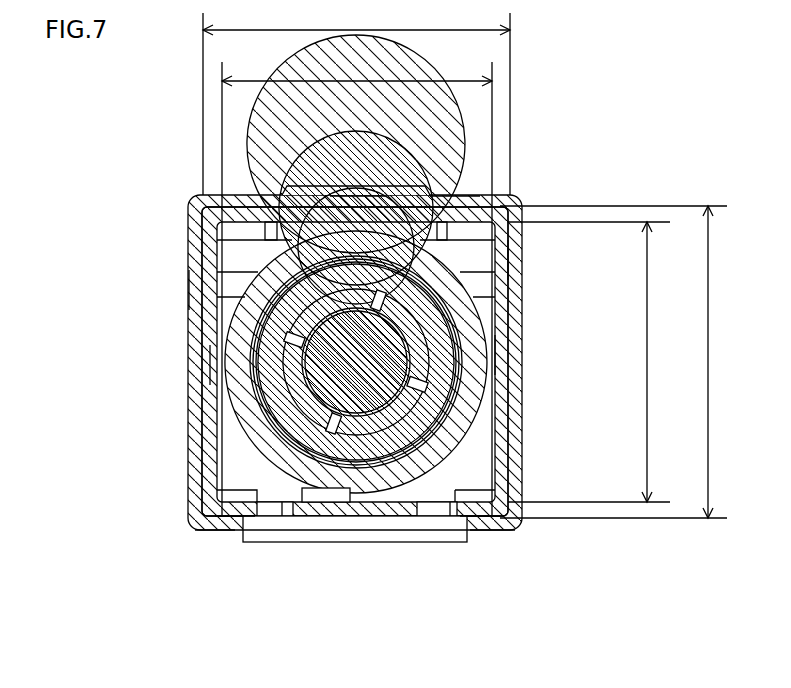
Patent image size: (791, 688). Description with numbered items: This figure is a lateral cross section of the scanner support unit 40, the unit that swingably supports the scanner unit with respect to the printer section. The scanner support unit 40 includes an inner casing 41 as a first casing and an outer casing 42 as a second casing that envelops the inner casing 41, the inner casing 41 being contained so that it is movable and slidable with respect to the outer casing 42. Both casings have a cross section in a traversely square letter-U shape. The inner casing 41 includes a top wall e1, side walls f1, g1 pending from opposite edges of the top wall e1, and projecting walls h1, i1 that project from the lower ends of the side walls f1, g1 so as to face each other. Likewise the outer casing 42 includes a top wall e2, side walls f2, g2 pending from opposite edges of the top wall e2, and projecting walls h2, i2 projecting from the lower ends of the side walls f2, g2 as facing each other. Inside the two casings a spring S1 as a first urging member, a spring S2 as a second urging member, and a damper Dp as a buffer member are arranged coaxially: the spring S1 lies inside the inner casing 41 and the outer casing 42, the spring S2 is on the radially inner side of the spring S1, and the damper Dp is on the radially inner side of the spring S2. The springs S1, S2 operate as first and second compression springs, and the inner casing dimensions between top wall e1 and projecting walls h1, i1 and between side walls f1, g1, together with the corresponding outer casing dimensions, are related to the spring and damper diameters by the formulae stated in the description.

The scanner support unit 40 is at (245, 190).
The inner casing 41 is at (503, 310).
The outer casing 42 is at (522, 212).
The top wall e1 is at (357, 195).
The top wall e2 is at (455, 195).
The side wall f1 is at (210, 366).
The side wall f2 is at (192, 290).
The side wall g1 is at (495, 355).
The side wall g2 is at (508, 258).
The projecting wall h1 is at (230, 517).
The projecting wall h2 is at (212, 530).
The projecting wall i1 is at (480, 512).
The projecting wall i2 is at (498, 530).
The spring S1 is at (470, 396).
The spring S2 is at (432, 442).
The damper Dp is at (345, 395).